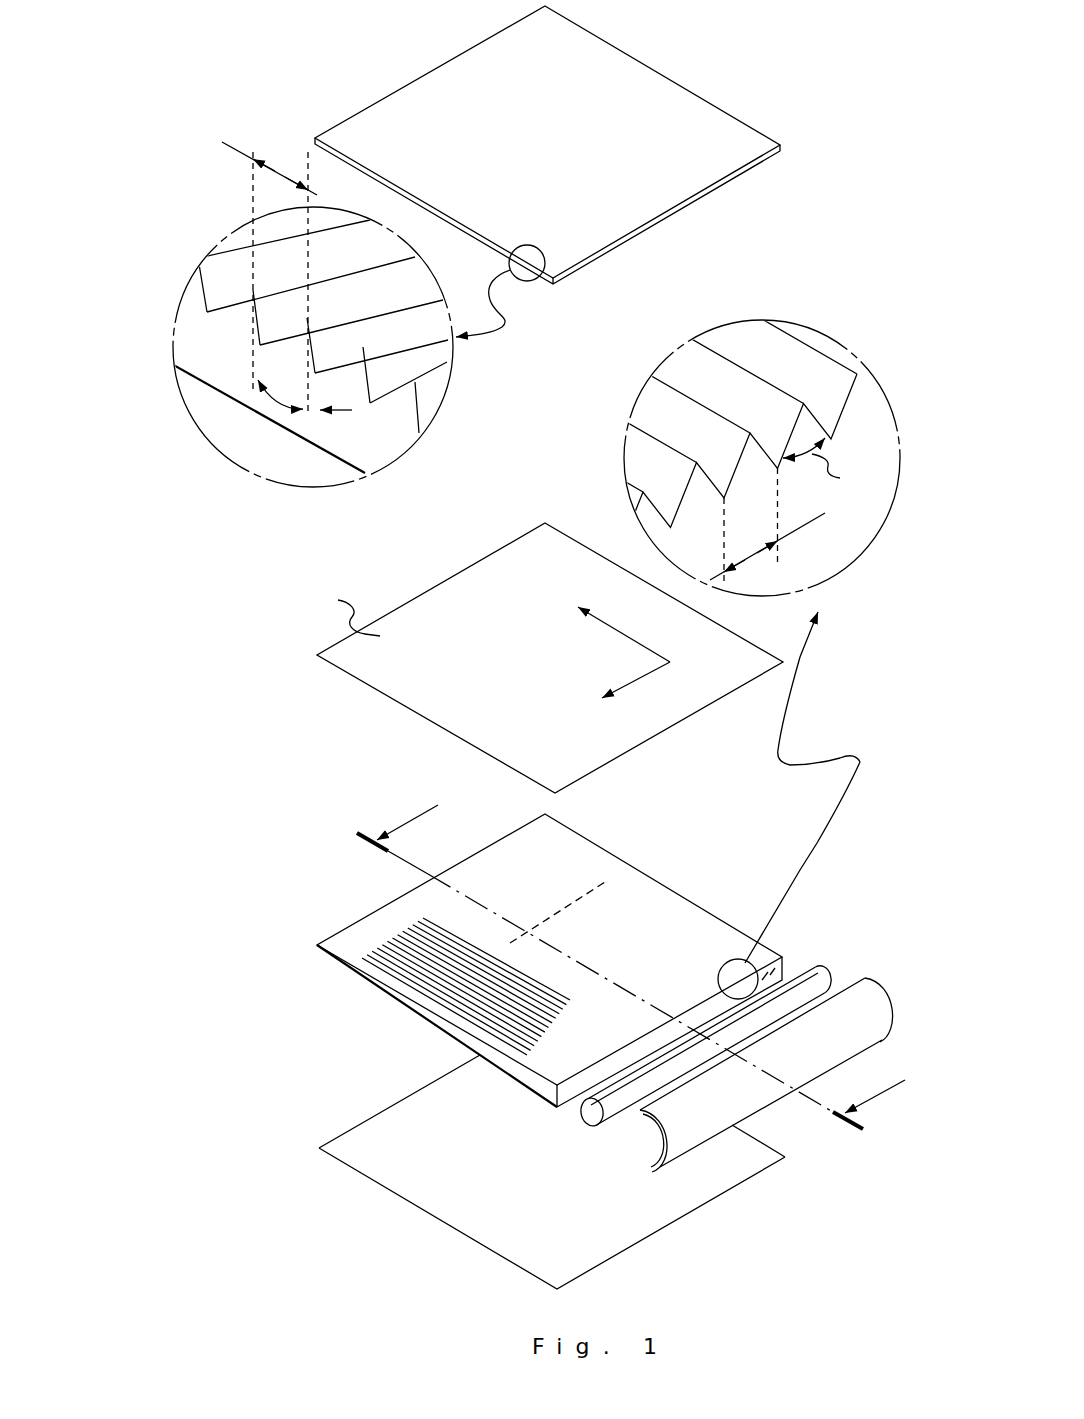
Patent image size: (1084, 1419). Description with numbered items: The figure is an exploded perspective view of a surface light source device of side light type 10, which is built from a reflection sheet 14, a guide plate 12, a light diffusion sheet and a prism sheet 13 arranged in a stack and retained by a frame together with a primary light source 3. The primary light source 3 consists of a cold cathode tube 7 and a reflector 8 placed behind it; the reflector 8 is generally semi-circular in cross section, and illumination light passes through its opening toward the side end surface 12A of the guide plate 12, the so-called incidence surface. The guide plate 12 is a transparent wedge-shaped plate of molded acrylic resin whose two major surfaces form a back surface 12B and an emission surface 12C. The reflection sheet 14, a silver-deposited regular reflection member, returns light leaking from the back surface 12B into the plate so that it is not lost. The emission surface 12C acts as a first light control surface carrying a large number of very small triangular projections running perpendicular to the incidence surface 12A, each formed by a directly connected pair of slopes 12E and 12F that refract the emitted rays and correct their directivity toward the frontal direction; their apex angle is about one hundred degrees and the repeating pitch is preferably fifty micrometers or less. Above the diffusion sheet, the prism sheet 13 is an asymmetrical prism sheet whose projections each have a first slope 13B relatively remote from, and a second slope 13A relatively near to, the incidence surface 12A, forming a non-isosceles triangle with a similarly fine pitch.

The primary light source 3 is at (715, 1120).
The cold cathode tube 7 is at (600, 1107).
The reflector 8 is at (643, 1116).
The surface light source device of side light type 10 is at (537, 660).
The guide plate 12 is at (578, 961).
The side end surface 12A is at (787, 952).
The back surface 12B is at (380, 998).
The emission surface 12C is at (667, 905).
The slope 12E is at (717, 383).
The slope 12F is at (795, 387).
The prism sheet 13 is at (727, 128).
The second slope 13A is at (378, 370).
The first slope 13B is at (360, 340).
The reflection sheet 14 is at (598, 1255).